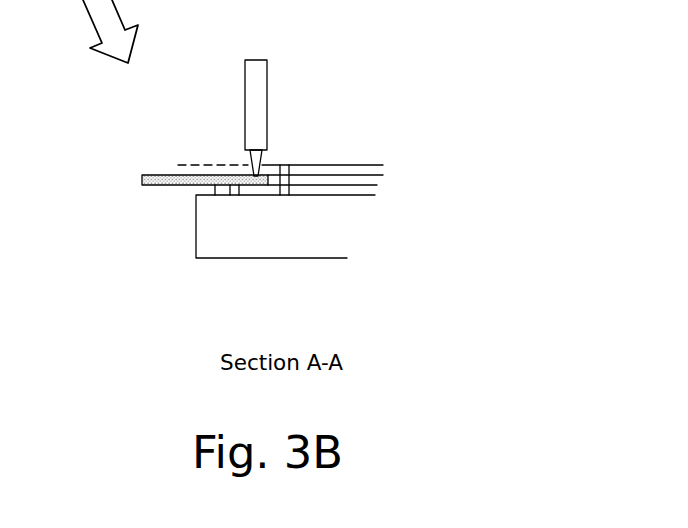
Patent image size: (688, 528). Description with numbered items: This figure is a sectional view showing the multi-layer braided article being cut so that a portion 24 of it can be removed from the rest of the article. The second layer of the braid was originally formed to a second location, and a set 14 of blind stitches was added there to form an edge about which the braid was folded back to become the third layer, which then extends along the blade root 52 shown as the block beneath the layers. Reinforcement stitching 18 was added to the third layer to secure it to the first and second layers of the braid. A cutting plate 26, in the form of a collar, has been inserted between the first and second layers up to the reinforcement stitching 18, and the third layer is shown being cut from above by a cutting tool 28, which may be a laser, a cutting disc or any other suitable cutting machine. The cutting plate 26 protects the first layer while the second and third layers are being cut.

The set of blind stitches 14 is at (161, 129).
The reinforcement stitching 18 is at (288, 163).
The portion 24 is at (223, 164).
The cutting plate 26 is at (142, 176).
The cutting tool 28 is at (267, 98).
The blade root 52 is at (240, 243).